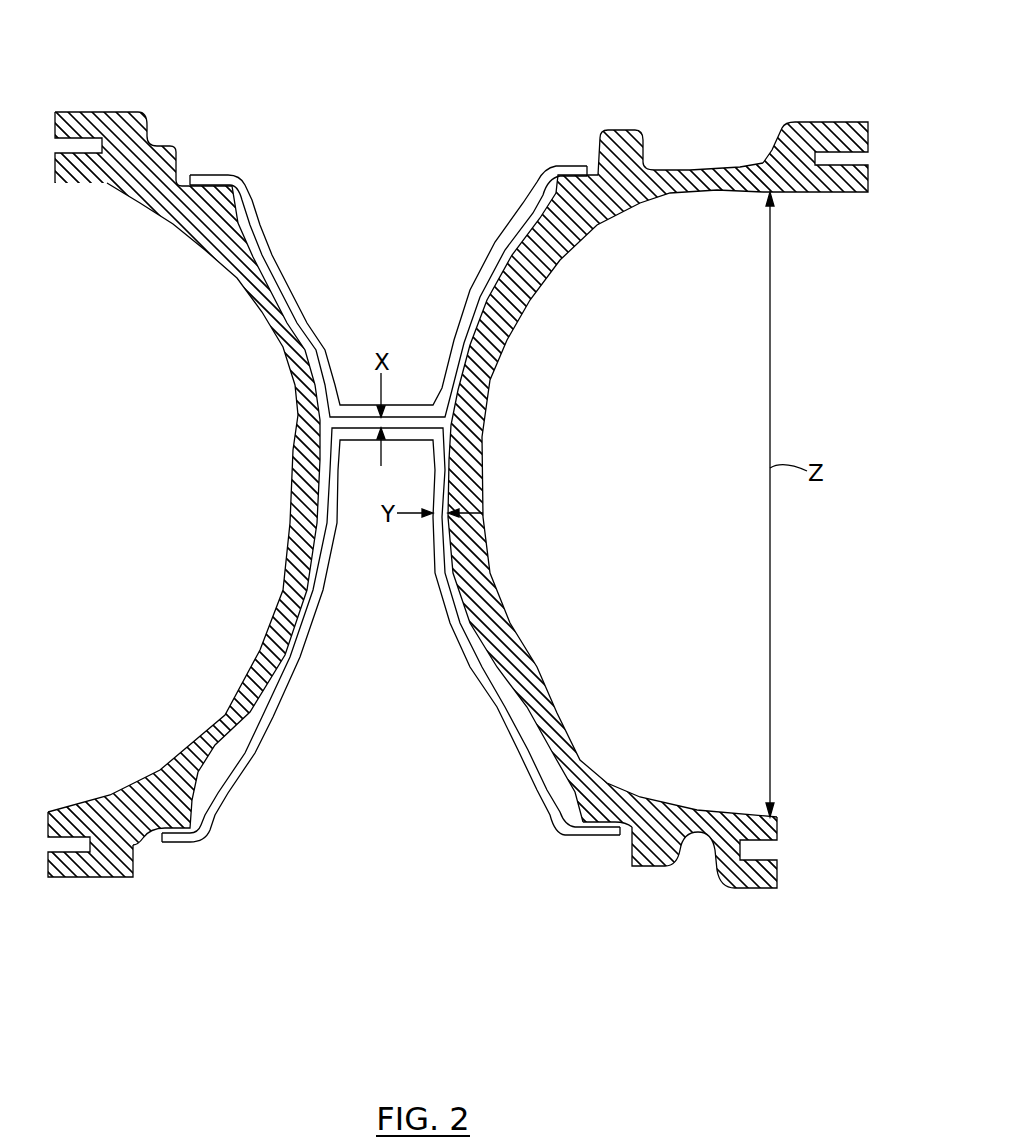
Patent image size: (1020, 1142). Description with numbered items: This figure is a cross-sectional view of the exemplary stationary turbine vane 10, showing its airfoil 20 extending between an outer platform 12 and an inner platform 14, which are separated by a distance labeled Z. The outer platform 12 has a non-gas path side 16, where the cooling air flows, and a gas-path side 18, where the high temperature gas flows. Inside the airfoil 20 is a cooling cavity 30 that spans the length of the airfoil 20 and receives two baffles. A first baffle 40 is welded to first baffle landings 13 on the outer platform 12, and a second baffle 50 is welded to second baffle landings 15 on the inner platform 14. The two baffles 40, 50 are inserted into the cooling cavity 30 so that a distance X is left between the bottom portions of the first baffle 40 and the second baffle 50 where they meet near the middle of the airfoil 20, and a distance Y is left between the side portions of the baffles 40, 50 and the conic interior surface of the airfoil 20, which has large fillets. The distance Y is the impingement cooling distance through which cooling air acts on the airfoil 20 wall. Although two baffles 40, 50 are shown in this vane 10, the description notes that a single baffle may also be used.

The stationary turbine vane 10 is at (717, 65).
The outer platform 12 is at (827, 124).
The first baffle landings 13 is at (181, 178).
The inner platform 14 is at (780, 822).
The second baffle landings 15 is at (147, 836).
The non-gas path side 16 is at (653, 168).
The gas-path side 18 is at (668, 194).
The airfoil 20 is at (297, 427).
The cooling cavity 30 is at (402, 128).
The first baffle 40 is at (230, 177).
The second baffle 50 is at (219, 808).